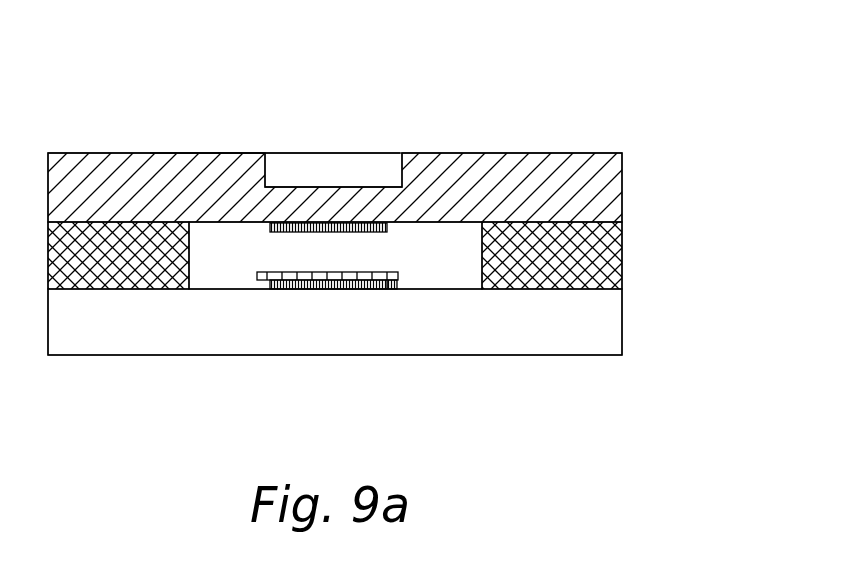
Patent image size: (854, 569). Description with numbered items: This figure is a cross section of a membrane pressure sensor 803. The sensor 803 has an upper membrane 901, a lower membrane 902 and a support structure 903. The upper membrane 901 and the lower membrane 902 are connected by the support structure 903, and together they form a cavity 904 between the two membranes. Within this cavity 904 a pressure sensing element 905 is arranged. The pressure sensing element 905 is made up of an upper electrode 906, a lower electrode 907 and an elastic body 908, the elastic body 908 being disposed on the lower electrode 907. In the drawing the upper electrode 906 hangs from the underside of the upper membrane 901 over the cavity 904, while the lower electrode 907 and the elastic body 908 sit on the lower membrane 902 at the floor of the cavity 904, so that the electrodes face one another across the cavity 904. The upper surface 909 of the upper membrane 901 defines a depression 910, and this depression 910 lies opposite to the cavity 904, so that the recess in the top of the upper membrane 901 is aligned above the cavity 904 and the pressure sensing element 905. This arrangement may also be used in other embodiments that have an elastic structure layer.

The membrane pressure sensor 803 is at (580, 68).
The upper membrane 901 is at (605, 187).
The lower membrane 902 is at (607, 327).
The support structure 903 is at (605, 253).
The cavity 904 is at (468, 265).
The pressure sensing element 905 is at (297, 325).
The upper electrode 906 is at (293, 233).
The lower electrode 907 is at (316, 289).
The elastic body 908 is at (395, 289).
The upper surface 909 is at (233, 153).
The depression 910 is at (310, 168).